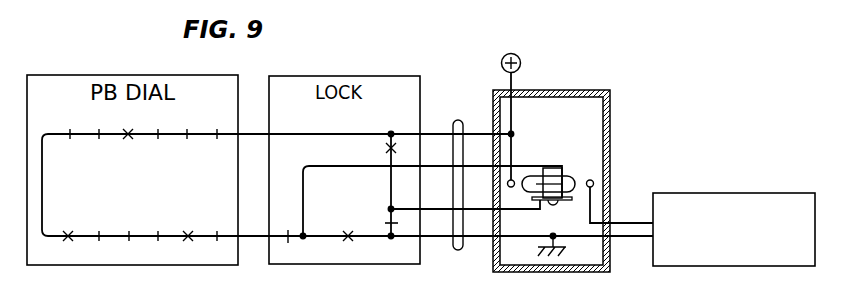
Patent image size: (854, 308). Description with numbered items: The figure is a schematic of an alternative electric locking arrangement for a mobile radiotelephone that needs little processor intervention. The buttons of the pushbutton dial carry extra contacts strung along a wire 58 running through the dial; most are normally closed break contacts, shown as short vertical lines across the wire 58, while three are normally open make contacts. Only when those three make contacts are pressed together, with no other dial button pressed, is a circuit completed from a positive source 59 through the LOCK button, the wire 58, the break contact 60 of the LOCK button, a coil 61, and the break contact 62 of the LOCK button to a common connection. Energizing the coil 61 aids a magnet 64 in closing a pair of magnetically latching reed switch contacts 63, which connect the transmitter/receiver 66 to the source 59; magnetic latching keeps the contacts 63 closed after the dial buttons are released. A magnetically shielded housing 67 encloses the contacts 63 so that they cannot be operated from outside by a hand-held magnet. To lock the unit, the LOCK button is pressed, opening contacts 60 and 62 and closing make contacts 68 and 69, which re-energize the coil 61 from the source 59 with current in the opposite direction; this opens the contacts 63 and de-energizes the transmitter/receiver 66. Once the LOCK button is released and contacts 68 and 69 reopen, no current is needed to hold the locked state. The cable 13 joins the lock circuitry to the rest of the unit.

The line cord / cable 13 is at (457, 119).
The wire 58 is at (229, 137).
The positive source 59 is at (521, 61).
The break contact 60 is at (288, 229).
The coil 61 is at (552, 172).
The break contact 62 is at (388, 223).
The magnetically latching reed switch contacts 63 is at (523, 178).
The magnet 64 is at (569, 200).
The transmitter/receiver 66 is at (724, 193).
The magnetically shielded housing 67 is at (612, 118).
The make contact 68 is at (347, 231).
The make contact 69 is at (385, 148).